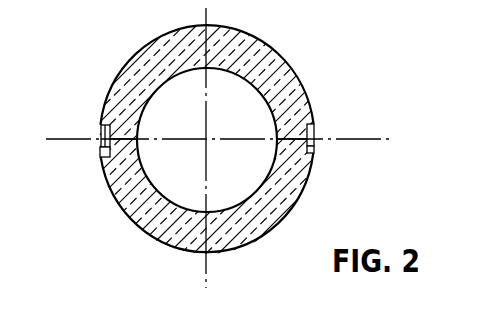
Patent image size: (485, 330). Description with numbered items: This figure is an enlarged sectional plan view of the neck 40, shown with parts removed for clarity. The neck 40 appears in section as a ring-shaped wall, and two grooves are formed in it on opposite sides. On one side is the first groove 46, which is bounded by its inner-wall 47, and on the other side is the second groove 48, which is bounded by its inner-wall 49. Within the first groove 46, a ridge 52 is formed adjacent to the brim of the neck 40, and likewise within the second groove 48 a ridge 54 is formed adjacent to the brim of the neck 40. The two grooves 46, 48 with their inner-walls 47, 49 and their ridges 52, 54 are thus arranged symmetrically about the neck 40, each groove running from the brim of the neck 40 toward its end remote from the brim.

The neck 40 is at (110, 51).
The first groove 46 is at (96, 128).
The inner-wall 47 is at (101, 150).
The second groove 48 is at (317, 129).
The inner-wall 49 is at (315, 148).
The ridge 52 is at (101, 138).
The ridge 54 is at (315, 136).